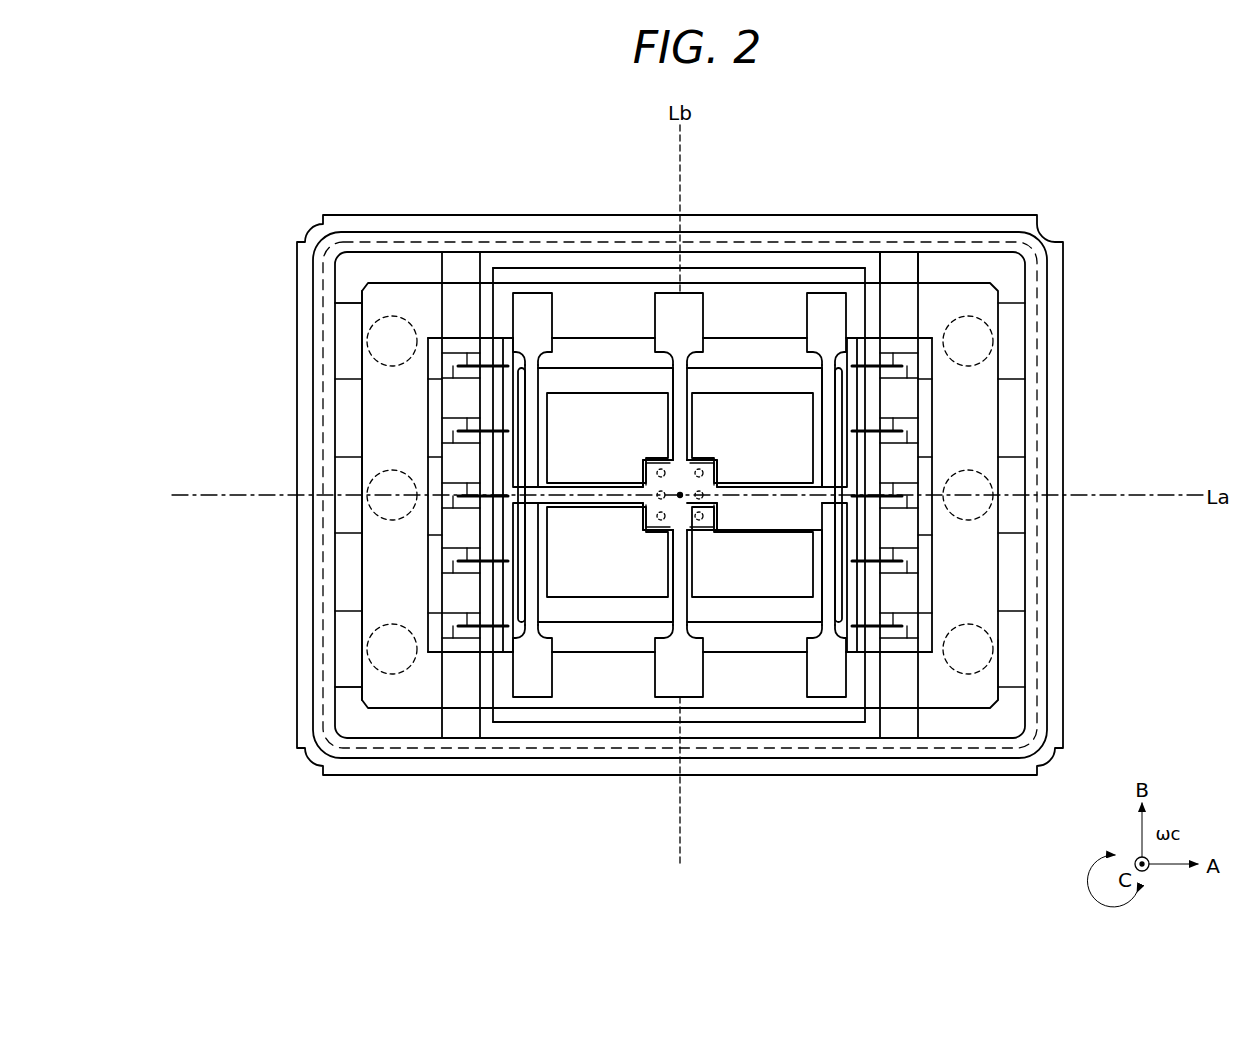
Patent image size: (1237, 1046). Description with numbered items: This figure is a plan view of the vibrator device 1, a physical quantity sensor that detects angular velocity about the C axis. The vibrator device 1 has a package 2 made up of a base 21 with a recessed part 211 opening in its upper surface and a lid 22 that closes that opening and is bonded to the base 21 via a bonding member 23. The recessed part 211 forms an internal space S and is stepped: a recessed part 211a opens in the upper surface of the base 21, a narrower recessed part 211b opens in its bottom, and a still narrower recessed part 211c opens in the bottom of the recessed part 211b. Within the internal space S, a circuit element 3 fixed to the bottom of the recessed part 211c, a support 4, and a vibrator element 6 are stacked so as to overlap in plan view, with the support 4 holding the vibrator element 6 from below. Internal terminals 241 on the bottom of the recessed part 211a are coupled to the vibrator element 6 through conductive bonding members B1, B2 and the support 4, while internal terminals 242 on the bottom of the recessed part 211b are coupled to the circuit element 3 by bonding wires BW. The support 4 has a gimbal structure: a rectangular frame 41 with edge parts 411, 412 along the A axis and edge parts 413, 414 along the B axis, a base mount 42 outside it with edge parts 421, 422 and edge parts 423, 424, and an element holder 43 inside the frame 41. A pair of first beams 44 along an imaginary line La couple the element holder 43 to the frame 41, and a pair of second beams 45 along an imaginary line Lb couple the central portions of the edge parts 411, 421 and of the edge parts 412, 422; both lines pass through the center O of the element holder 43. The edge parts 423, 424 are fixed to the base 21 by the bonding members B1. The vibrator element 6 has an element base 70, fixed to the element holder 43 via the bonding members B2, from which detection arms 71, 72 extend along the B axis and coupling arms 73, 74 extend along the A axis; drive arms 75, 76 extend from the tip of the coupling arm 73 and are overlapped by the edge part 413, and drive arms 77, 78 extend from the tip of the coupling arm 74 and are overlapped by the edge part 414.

The vibrator device 1 is at (1105, 192).
The package 2 is at (748, 495).
The base 21 is at (1053, 398).
The lid 22 is at (1037, 455).
The bonding member 23 is at (1040, 427).
The circuit element 3 is at (753, 715).
The support 4 is at (356, 419).
The vibrator element 6 is at (664, 288).
The frame 41 is at (750, 380).
The base mount 42 is at (383, 300).
The element holder 43 is at (717, 463).
The first beam 44 is at (588, 482).
The second beam 45 is at (713, 357).
The element base 70 is at (688, 523).
The detection arm 71 is at (689, 322).
The detection arm 72 is at (690, 667).
The coupling arm 73 is at (782, 495).
The coupling arm 74 is at (640, 690).
The drive arm 75 is at (823, 333).
The drive arm 76 is at (828, 648).
The drive arm 77 is at (533, 327).
The drive arm 78 is at (531, 670).
The recessed part 211 is at (814, 136).
The recessed part 211a is at (990, 272).
The recessed part 211b is at (898, 258).
The recessed part 211c is at (817, 260).
The internal terminal 241 is at (357, 336).
The internal terminal 242 is at (447, 427).
The edge part 411 is at (598, 377).
The edge part 412 is at (594, 605).
The edge part 413 is at (838, 535).
The edge part 414 is at (520, 535).
The edge part 421 is at (570, 310).
The edge part 422 is at (790, 687).
The edge part 423 is at (970, 588).
The edge part 424 is at (387, 590).
The bonding member B1 is at (383, 350).
The bonding member B2 is at (661, 468).
The bonding wire BW is at (472, 345).
The center O is at (679, 496).
The internal space S is at (980, 720).